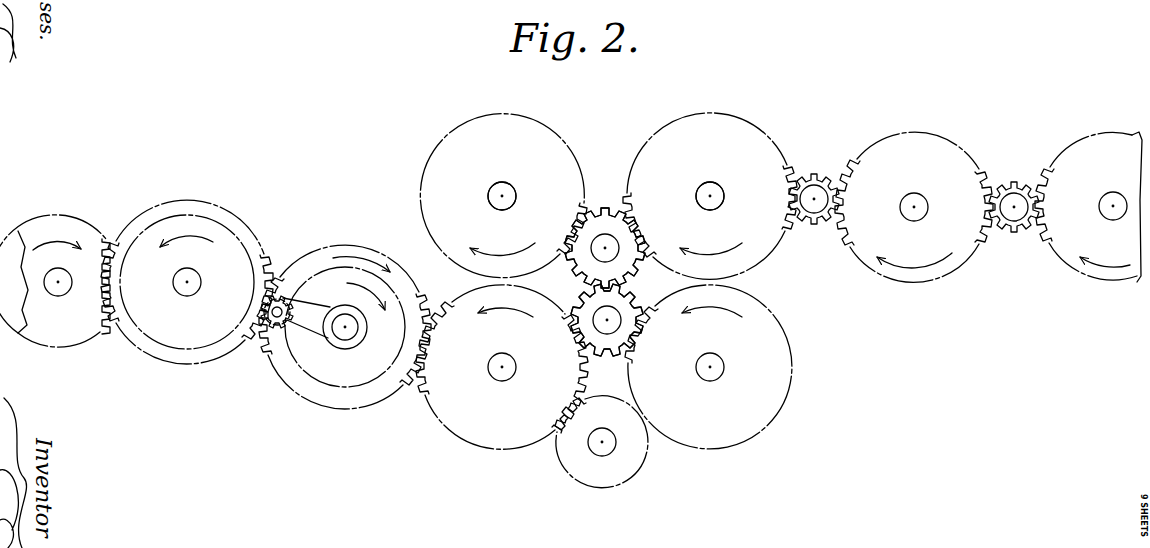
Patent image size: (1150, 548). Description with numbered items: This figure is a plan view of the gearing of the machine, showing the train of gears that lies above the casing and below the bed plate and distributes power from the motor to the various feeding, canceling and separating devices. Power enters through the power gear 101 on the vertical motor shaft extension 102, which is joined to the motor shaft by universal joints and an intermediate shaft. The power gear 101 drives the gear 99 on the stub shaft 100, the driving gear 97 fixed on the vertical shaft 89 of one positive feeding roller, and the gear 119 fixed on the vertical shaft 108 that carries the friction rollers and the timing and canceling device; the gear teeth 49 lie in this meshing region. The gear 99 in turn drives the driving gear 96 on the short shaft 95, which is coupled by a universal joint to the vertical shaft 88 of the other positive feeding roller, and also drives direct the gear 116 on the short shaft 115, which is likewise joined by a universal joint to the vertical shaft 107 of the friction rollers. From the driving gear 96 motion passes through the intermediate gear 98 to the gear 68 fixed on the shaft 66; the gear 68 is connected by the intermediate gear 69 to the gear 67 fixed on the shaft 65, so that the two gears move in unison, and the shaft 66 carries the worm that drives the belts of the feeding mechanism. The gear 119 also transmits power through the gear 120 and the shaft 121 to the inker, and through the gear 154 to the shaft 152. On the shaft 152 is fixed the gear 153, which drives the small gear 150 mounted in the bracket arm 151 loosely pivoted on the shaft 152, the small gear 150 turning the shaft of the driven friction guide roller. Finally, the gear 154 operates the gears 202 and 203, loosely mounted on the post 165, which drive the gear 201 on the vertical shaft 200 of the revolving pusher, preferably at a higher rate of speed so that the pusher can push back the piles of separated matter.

The gear teeth 49 is at (584, 372).
The shaft 65 is at (1100, 204).
The shaft 66 is at (901, 204).
The gear 67 is at (1088, 207).
The gear 68 is at (914, 207).
The intermediate gear 69 is at (1014, 192).
The vertical shaft 88 is at (707, 183).
The vertical shaft 89 is at (709, 354).
The short shaft 95 is at (718, 206).
The driving gear 96 is at (710, 196).
The driving gear 97 is at (708, 367).
The intermediate gear 98 is at (815, 186).
The gear 99 is at (634, 272).
The stub shaft 100 is at (605, 240).
The power gear 101 is at (583, 298).
The vertical motor shaft extension 102 is at (613, 328).
The vertical shaft 107 is at (517, 196).
The vertical shaft 108 is at (510, 378).
The short shaft 115 is at (502, 209).
The gear 116 is at (503, 196).
The gear 119 is at (491, 367).
The gear 120 is at (601, 442).
The shaft 121 is at (617, 442).
The small gear 150 is at (272, 326).
The bracket arm 151 is at (307, 318).
The shaft 152 is at (337, 339).
The gear 153 is at (345, 322).
The gear 154 is at (345, 327).
The post 165 is at (201, 282).
The vertical shaft 200 is at (62, 281).
The gear 201 is at (55, 281).
The gear 202 is at (187, 282).
The gear 203 is at (190, 364).